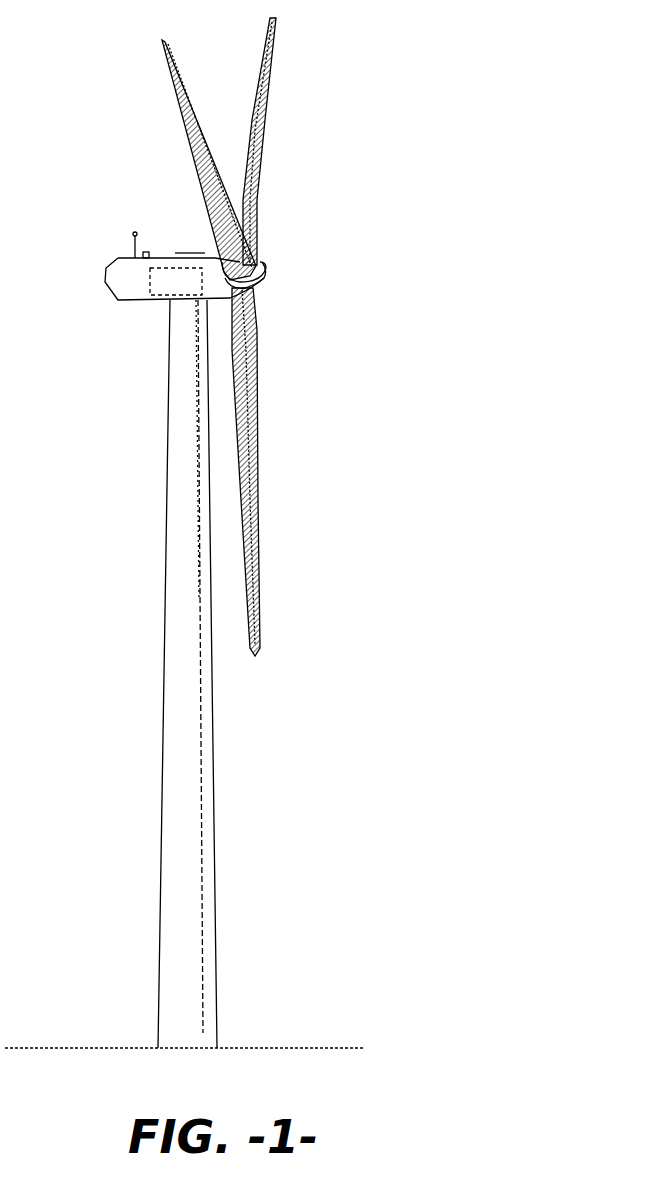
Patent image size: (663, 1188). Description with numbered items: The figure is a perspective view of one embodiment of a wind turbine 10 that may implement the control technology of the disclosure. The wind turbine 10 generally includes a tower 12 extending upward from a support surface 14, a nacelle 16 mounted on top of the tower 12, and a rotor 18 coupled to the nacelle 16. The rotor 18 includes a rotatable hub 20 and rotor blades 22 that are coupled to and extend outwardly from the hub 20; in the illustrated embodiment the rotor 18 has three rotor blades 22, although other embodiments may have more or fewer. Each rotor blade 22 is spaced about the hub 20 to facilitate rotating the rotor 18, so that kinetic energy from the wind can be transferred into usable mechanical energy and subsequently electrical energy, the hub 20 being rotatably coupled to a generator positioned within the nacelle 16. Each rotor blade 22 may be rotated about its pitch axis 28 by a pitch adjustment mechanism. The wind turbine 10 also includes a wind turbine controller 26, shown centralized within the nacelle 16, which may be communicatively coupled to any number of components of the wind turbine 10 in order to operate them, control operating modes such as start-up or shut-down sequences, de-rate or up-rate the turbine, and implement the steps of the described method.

The wind turbine 10 is at (374, 178).
The tower 12 is at (190, 787).
The support surface 14 is at (134, 1046).
The nacelle 16 is at (140, 300).
The rotor 18 is at (272, 258).
The rotatable hub 20 is at (268, 274).
The rotor blade 22 is at (187, 90).
The wind turbine controller 26 is at (165, 266).
The pitch axis 28 is at (195, 160).